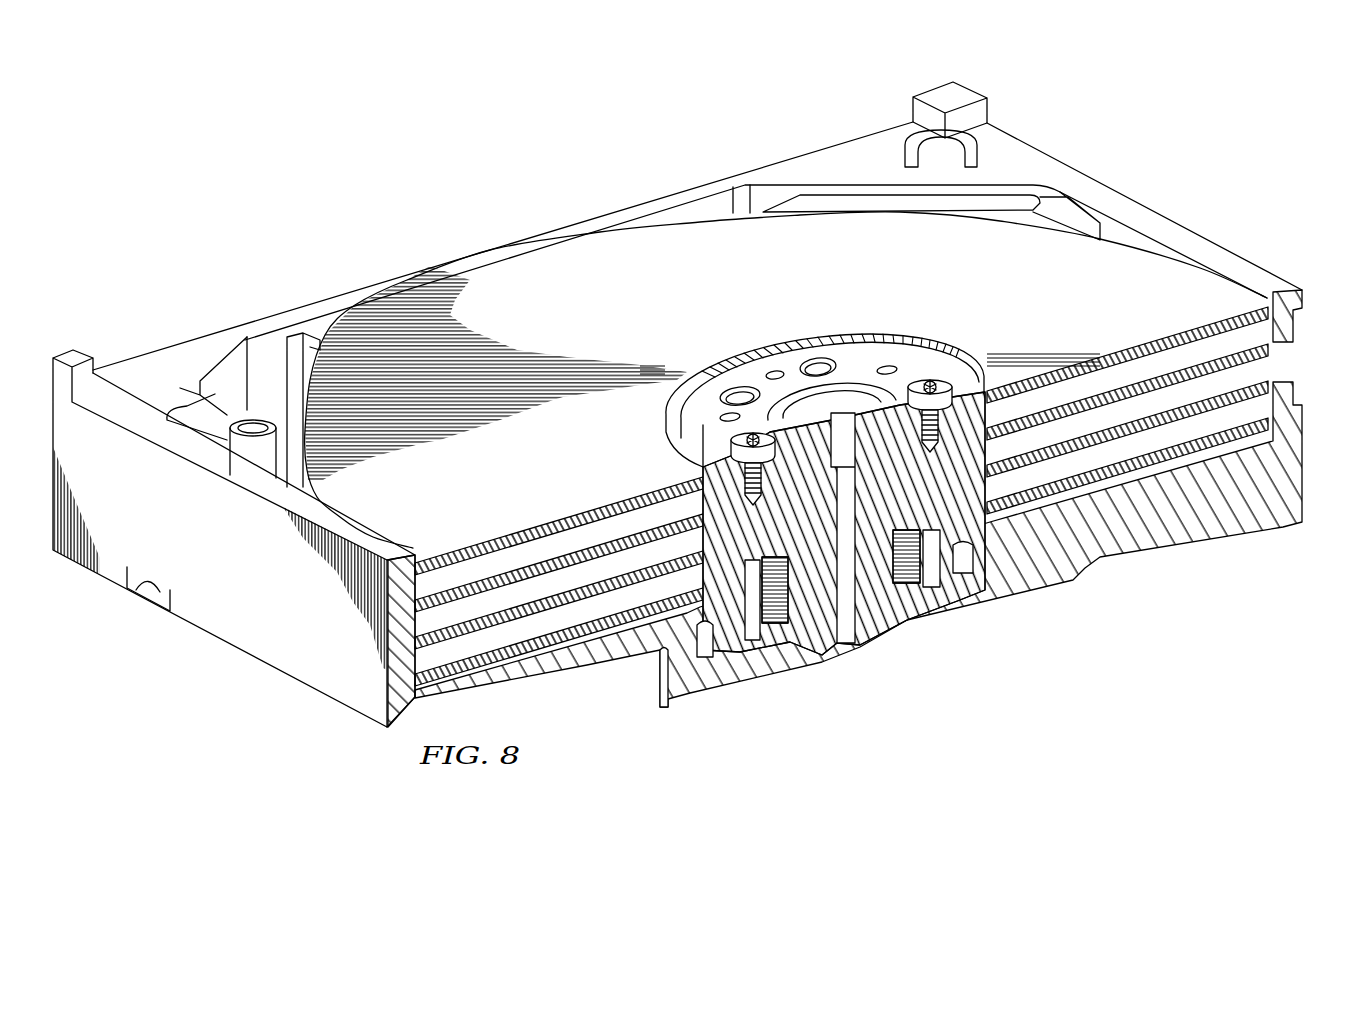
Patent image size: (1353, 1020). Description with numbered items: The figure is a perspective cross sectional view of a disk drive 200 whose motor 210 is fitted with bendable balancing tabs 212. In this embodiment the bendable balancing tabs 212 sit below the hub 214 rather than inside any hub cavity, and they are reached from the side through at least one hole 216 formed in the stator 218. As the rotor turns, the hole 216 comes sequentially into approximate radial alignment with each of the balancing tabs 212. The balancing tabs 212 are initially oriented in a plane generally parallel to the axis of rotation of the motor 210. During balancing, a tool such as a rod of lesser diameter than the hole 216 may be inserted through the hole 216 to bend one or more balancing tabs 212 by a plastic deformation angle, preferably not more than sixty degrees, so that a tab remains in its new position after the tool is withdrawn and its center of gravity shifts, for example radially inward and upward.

The disk drive 200 is at (469, 197).
The motor 210 is at (874, 322).
The bendable balancing tabs 212 is at (713, 645).
The hub 214 is at (942, 486).
The hole 216 is at (663, 660).
The stator 218 is at (1172, 525).